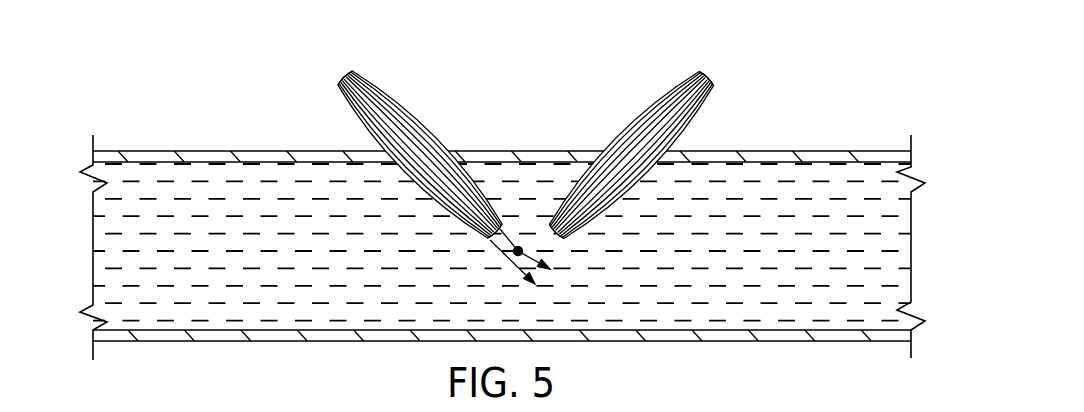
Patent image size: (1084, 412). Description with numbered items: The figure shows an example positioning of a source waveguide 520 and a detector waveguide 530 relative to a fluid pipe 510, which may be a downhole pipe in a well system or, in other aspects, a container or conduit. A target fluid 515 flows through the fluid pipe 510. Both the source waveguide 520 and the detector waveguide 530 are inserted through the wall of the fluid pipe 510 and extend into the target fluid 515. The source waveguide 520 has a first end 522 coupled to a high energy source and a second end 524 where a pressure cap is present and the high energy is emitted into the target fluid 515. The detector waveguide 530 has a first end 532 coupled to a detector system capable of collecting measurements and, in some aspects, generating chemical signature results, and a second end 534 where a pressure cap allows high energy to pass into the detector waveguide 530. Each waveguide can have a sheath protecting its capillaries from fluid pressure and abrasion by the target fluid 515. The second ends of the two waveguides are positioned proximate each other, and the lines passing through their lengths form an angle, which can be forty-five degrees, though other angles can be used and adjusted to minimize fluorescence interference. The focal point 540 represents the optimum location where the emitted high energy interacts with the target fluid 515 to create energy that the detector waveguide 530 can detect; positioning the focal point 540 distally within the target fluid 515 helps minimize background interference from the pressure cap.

The fluid pipe 510 is at (813, 150).
The target fluid 515 is at (293, 259).
The source waveguide 520 is at (432, 141).
The first end 522 is at (342, 84).
The second end 524 is at (483, 239).
The detector waveguide 530 is at (618, 141).
The first end 532 is at (713, 83).
The second end 534 is at (568, 238).
The focal point 540 is at (516, 256).